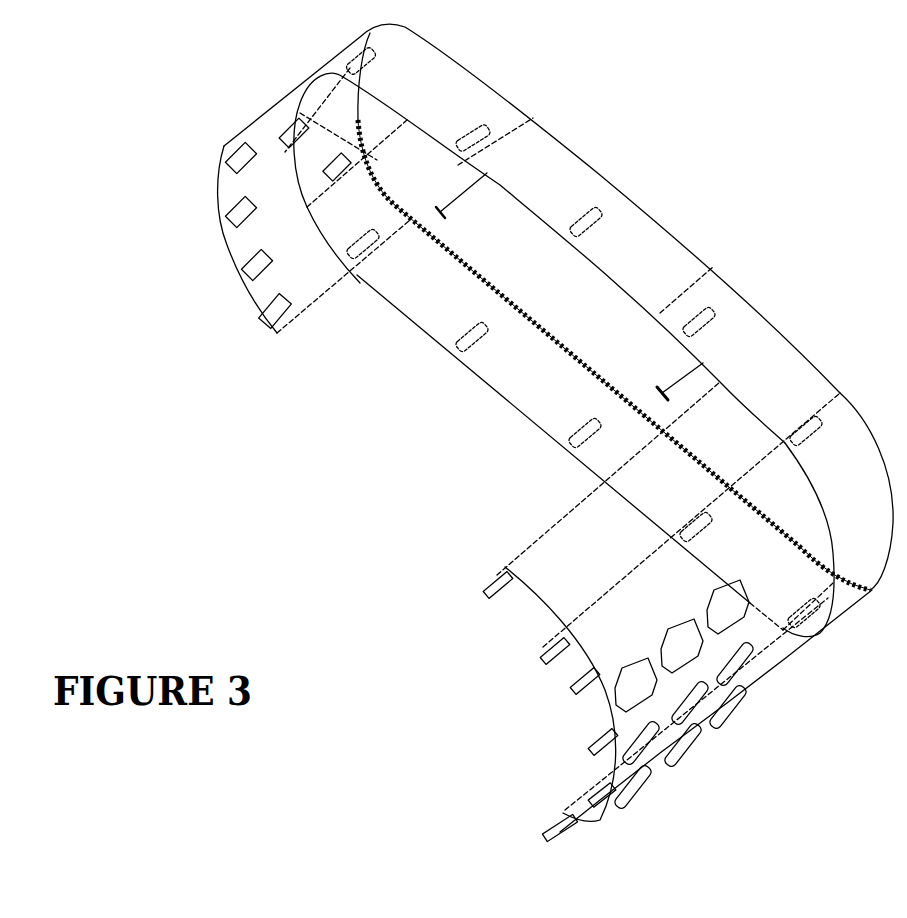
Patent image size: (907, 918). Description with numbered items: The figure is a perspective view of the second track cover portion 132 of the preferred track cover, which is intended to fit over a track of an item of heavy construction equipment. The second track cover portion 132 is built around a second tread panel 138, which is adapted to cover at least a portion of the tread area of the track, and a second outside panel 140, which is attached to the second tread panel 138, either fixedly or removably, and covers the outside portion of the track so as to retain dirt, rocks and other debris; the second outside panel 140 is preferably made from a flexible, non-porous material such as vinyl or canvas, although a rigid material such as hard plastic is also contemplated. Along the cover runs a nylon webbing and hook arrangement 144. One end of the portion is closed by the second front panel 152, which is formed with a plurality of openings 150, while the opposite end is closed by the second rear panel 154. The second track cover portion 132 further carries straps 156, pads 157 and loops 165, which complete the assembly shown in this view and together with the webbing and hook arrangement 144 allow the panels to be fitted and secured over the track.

The second track cover portion 132 is at (642, 134).
The second tread panel 138 is at (500, 368).
The second outside panel 140 is at (593, 323).
The nylon webbing and hook arrangement 144 is at (467, 192).
The openings 150 is at (630, 687).
The second front panel 152 is at (561, 596).
The second rear panel 154 is at (235, 190).
The straps 156 is at (553, 822).
The pads 157 is at (243, 267).
The loops 165 is at (714, 325).